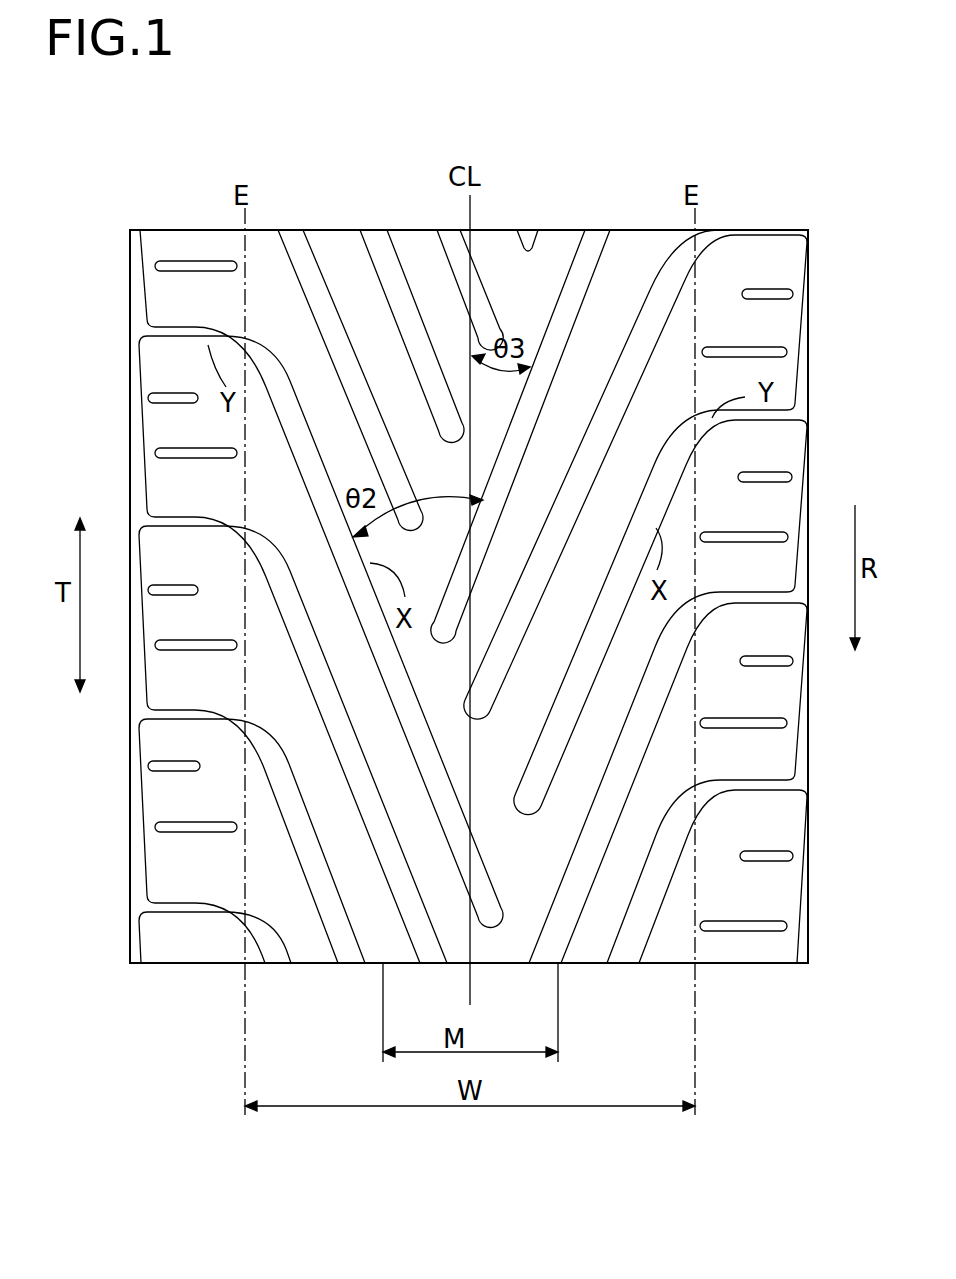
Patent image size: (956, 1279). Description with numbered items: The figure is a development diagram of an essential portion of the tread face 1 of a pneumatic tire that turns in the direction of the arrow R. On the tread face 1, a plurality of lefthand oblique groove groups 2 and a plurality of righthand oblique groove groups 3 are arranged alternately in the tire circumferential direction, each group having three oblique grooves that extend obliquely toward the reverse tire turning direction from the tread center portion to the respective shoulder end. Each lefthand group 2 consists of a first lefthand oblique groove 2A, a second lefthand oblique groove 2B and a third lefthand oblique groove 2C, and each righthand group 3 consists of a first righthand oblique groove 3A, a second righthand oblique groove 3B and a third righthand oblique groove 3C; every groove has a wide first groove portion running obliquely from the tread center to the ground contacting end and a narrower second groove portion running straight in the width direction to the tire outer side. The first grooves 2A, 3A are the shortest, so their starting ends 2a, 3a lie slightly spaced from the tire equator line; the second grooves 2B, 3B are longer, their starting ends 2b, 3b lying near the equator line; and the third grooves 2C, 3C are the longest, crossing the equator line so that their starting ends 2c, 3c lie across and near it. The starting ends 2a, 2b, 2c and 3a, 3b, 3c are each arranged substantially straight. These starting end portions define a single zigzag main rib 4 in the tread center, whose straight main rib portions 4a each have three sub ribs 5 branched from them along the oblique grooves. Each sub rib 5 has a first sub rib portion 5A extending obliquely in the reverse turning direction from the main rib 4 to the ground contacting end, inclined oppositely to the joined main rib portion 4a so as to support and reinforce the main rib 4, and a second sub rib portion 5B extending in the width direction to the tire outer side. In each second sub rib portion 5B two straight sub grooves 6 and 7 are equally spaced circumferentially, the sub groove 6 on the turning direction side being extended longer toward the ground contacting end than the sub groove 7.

The tread face 1 is at (716, 232).
The lefthand oblique groove group 2 is at (303, 297).
The first lefthand oblique groove 2A is at (298, 262).
The second lefthand oblique groove 2B is at (400, 262).
The third lefthand oblique groove 2C is at (281, 360).
The starting end of first lefthand oblique groove 2a is at (412, 532).
The starting end of second lefthand oblique groove 2b is at (450, 440).
The starting end of third lefthand oblique groove 2c is at (497, 943).
The righthand oblique groove group 3 is at (575, 248).
The first righthand oblique groove 3A is at (672, 472).
The second righthand oblique groove 3B is at (663, 325).
The third righthand oblique groove 3C is at (612, 248).
The starting end of first righthand oblique groove 3a is at (527, 818).
The starting end of second righthand oblique groove 3b is at (487, 722).
The starting end of third righthand oblique groove 3c is at (469, 613).
The main rib 4 is at (511, 229).
The main rib portion 4a is at (508, 407).
The sub rib 5 is at (384, 352).
The first sub rib portion 5A is at (306, 566).
The second sub rib portion 5B is at (176, 488).
The sub groove 6 is at (180, 453).
The sub groove 7 is at (176, 388).